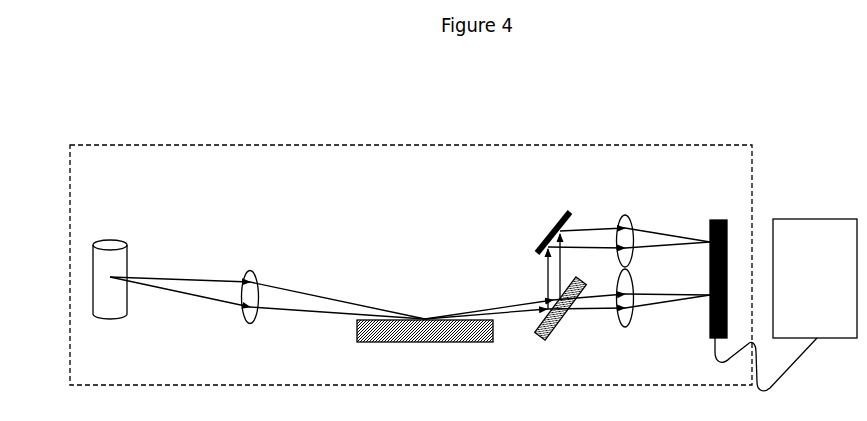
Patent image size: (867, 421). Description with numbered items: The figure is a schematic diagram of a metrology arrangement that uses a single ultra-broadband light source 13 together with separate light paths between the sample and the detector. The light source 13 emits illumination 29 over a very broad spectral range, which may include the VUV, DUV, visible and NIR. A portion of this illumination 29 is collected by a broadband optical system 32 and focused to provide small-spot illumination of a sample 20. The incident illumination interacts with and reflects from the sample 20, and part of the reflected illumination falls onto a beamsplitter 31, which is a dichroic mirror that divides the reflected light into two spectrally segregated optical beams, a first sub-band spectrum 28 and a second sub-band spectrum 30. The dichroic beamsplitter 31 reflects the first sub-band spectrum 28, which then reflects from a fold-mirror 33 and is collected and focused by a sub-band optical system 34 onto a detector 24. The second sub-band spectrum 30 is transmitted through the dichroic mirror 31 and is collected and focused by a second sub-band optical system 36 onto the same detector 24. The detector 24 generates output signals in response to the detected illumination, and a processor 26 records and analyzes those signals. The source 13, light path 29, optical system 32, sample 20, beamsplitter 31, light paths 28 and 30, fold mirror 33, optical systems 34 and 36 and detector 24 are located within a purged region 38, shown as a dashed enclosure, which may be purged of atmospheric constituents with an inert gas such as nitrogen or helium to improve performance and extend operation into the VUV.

The ultra-broadband light source 13 is at (110, 289).
The sample 20 is at (425, 346).
The detector 24 is at (762, 286).
The processor 26 is at (804, 287).
The first sub-band spectrum 28 is at (617, 262).
The illumination 29 is at (331, 307).
The second sub-band spectrum 30 is at (628, 313).
The beamsplitter 31 is at (561, 321).
The broadband optical system 32 is at (248, 312).
The fold-mirror 33 is at (549, 232).
The sub-band optical system 34 is at (625, 230).
The sub-band optical system 36 is at (625, 309).
The purged region 38 is at (412, 197).